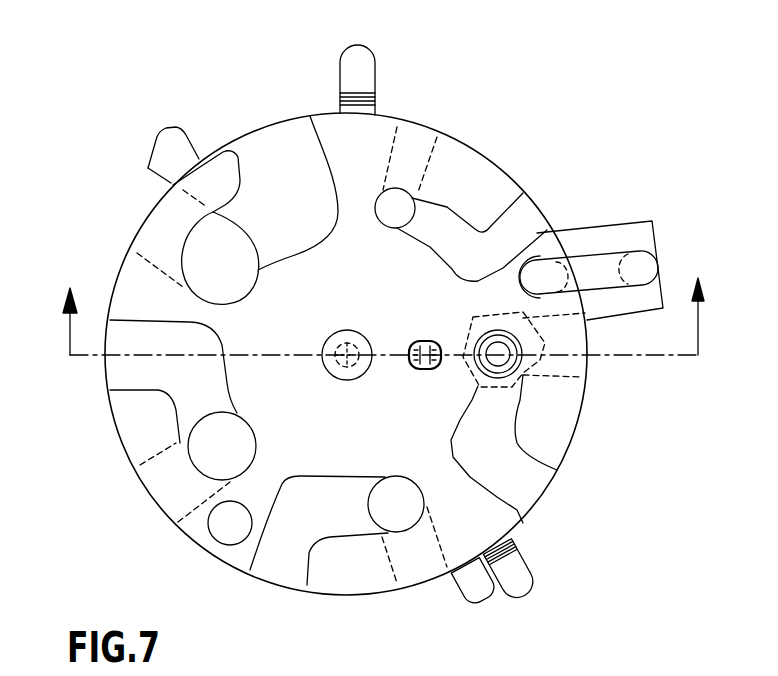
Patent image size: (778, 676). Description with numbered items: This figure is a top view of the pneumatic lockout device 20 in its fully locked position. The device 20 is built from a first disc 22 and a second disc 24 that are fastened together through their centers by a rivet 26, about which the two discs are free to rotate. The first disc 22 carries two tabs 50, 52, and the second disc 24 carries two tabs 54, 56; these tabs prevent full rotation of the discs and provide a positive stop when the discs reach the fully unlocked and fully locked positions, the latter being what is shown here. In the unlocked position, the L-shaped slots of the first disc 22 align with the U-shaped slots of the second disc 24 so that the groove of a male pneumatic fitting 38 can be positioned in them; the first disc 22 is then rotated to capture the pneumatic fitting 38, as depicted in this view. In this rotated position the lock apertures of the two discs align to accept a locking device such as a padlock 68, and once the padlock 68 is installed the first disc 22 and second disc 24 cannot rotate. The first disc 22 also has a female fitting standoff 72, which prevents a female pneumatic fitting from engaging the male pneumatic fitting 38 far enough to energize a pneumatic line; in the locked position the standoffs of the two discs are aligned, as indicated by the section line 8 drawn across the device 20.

The section line 8- 8 is at (383, 300).
The pneumatic lockout device 20 is at (477, 136).
The first disc 22 is at (325, 122).
The second disc 24 is at (330, 517).
The rivet 26 is at (323, 362).
The pneumatic fitting 38 is at (523, 373).
The tab 50 is at (366, 72).
The tab 52 is at (528, 583).
The tab 54 is at (162, 147).
The tab 56 is at (466, 601).
The padlock 68 is at (597, 262).
The female fitting standoff 72 is at (425, 342).